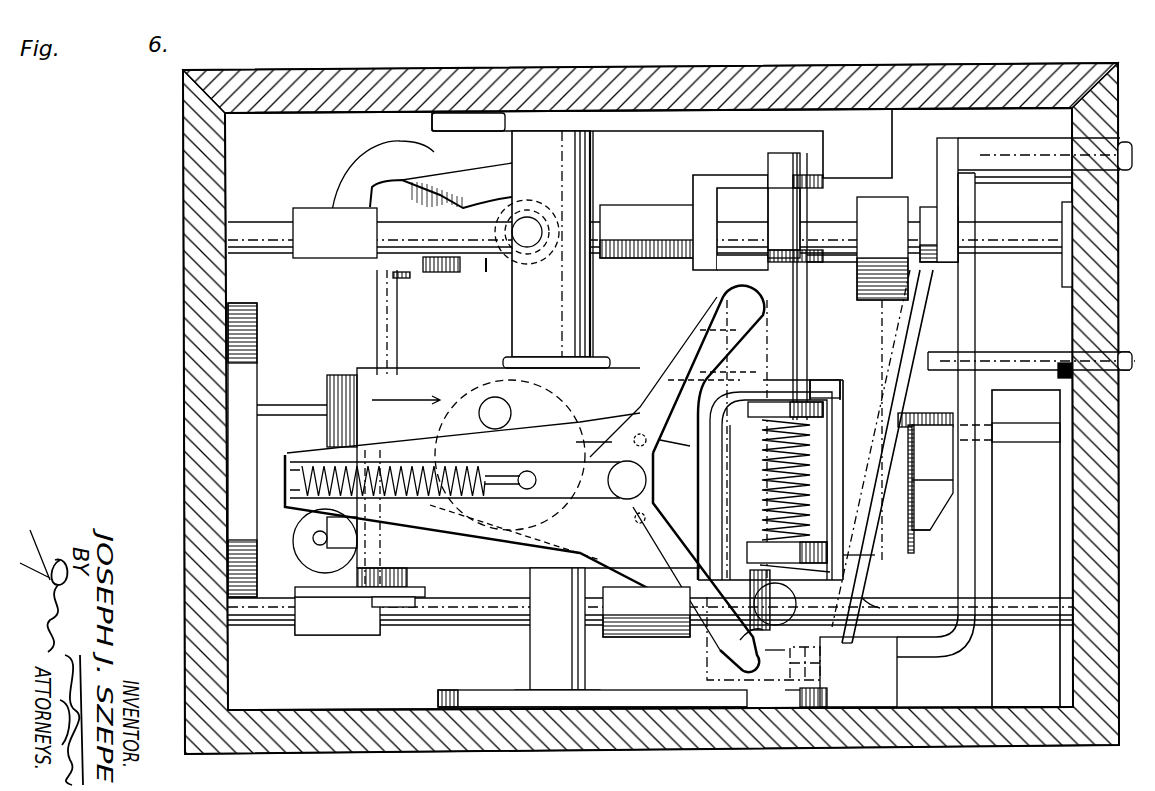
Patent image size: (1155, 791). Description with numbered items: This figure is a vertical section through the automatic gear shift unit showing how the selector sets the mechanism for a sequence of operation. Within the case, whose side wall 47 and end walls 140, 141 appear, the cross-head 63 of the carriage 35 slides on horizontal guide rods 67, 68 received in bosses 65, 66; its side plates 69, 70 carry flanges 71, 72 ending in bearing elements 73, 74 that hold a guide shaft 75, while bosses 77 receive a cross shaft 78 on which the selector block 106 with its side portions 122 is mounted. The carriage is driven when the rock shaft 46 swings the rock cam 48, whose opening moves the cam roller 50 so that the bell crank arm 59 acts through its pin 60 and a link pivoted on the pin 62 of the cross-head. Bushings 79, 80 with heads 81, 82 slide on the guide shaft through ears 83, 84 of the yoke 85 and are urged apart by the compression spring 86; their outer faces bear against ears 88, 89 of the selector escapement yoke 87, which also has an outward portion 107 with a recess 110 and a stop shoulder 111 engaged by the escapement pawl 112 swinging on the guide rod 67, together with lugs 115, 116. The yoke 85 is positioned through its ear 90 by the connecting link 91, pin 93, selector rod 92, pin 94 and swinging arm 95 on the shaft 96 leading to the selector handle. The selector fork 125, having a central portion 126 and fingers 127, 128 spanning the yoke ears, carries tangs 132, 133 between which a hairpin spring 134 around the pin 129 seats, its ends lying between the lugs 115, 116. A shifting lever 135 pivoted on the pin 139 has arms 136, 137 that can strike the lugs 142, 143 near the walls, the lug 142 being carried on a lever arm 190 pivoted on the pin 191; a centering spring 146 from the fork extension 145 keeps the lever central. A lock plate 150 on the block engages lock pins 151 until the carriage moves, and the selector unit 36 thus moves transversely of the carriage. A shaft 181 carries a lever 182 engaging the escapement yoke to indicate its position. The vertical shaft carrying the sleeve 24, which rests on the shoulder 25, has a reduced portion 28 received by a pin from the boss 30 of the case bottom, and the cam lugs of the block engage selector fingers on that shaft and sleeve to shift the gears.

The sleeve 24 is at (596, 320).
The shoulder 25 is at (596, 358).
The reduced portion 28 is at (575, 688).
The boss 30 is at (588, 692).
The carriage 35 is at (448, 610).
The selector unit 36 is at (837, 368).
The rock shaft 46 is at (505, 412).
The side wall 47 is at (185, 245).
The rock cam 48 is at (457, 162).
The cam roller 50 is at (542, 223).
The bell crank arm 59 is at (405, 178).
The pin 60 is at (320, 542).
The pin 62 is at (602, 228).
The cross-head 63 is at (490, 282).
The bosses 65 is at (365, 633).
The bosses 66 is at (305, 212).
The guide rod 67 is at (270, 226).
The guide rod 68 is at (260, 625).
The side plate 69 is at (672, 270).
The side plate 70 is at (515, 600).
The flange 71 is at (693, 190).
The flange 72 is at (700, 650).
The bearing element 73 is at (722, 188).
The bearing element 74 is at (745, 650).
The guide shaft 75 is at (768, 209).
The bosses 77 is at (422, 264).
The cross shaft 78 is at (377, 304).
The bushing 79 is at (800, 300).
The bushing 80 is at (805, 660).
The head portion 81 is at (843, 400).
The head portion 82 is at (875, 553).
The ear 83 is at (822, 380).
The ear 84 is at (825, 572).
The yoke 85 is at (840, 445).
The compression spring 86 is at (762, 480).
The selector escapement yoke 87 is at (718, 298).
The ear 88 is at (805, 252).
The ear 89 is at (790, 690).
The ear 90 is at (845, 640).
The connecting link 91 is at (897, 660).
The selector rod 92 is at (885, 513).
The pin 93 is at (873, 607).
The pin 94 is at (925, 230).
The swinging arm 95 is at (936, 152).
The shaft 96 is at (1003, 150).
The selector block 106 is at (452, 354).
The outwardly extending portion 107 is at (978, 520).
The recess 110 is at (872, 478).
The stop shoulder 111 is at (872, 492).
The escapement pawl 112 is at (892, 344).
The lug 115 is at (718, 422).
The lug 116 is at (745, 550).
The side portions 122 is at (452, 614).
The selector fork structure 125 is at (525, 433).
The central portion 126 is at (535, 540).
The finger 127 is at (731, 366).
The finger 128 is at (772, 650).
The pin 129 is at (478, 505).
The tang 132 is at (688, 392).
The tang 133 is at (640, 530).
The hairpin spring 134 is at (568, 558).
The shifting lever 135 is at (638, 395).
The lever arm 136 is at (712, 660).
The lever arm 137 is at (718, 320).
The pin 139 is at (604, 478).
The wall 140 is at (890, 735).
The wall 141 is at (410, 78).
The lug 142 is at (540, 453).
The lug 143 is at (720, 130).
The extension 145 is at (283, 500).
The centering spring 146 is at (300, 478).
The lock plate 150 is at (327, 389).
The lock pins 151 is at (300, 412).
The shaft 181 is at (1000, 355).
The lever 182 is at (1046, 344).
The lever arm 190 is at (994, 492).
The pivot pin 191 is at (1022, 438).